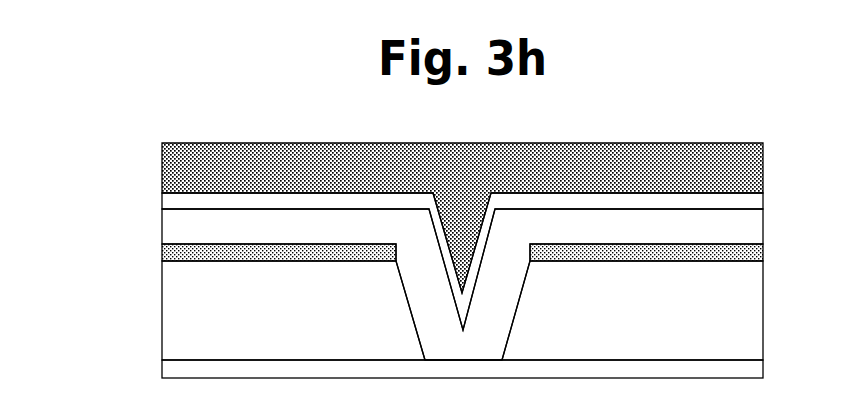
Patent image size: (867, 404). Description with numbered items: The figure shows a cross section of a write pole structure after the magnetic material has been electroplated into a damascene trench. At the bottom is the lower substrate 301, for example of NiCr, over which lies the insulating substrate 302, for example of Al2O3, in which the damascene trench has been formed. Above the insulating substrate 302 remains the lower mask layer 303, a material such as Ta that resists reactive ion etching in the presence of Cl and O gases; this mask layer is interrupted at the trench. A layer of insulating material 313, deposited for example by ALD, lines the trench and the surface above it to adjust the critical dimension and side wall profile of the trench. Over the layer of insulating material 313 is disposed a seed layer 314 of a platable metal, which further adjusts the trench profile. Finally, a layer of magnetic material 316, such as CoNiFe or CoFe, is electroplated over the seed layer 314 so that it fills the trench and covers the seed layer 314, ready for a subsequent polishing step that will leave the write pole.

The lower substrate 301 is at (398, 358).
The insulating substrate 302 is at (398, 310).
The lower mask layer 303 is at (398, 242).
The layer of insulating material 313 is at (398, 278).
The seed layer 314 is at (398, 251).
The layer of magnetic material 316 is at (398, 216).